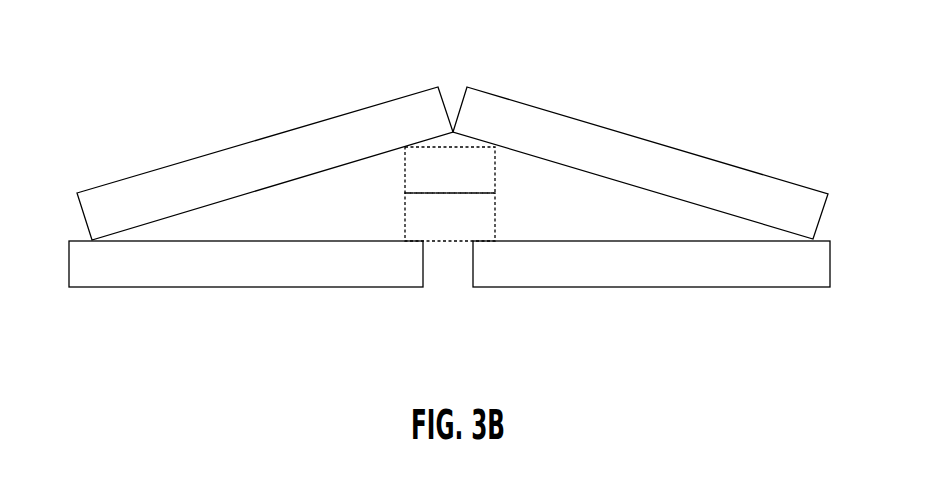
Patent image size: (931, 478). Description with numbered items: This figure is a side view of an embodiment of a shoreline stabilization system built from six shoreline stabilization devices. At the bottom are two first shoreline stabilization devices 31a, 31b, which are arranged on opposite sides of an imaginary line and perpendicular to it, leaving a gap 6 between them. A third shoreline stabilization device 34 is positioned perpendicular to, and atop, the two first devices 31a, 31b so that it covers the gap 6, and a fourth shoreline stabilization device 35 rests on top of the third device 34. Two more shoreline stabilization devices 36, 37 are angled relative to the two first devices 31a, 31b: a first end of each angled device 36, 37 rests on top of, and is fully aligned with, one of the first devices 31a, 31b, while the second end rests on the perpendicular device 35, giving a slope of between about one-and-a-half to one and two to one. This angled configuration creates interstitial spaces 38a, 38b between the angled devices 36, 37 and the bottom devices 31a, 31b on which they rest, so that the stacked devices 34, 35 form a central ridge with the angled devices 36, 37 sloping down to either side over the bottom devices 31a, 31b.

The gap 6 is at (427, 272).
The first shoreline stabilization device 31a is at (249, 270).
The first shoreline stabilization device 31b is at (698, 260).
The third shoreline stabilization device 34 is at (468, 213).
The fourth shoreline stabilization device 35 is at (442, 155).
The angled shoreline stabilization device 36 is at (273, 145).
The angled shoreline stabilization device 37 is at (607, 142).
The interstitial space 38a is at (295, 213).
The interstitial space 38b is at (600, 208).